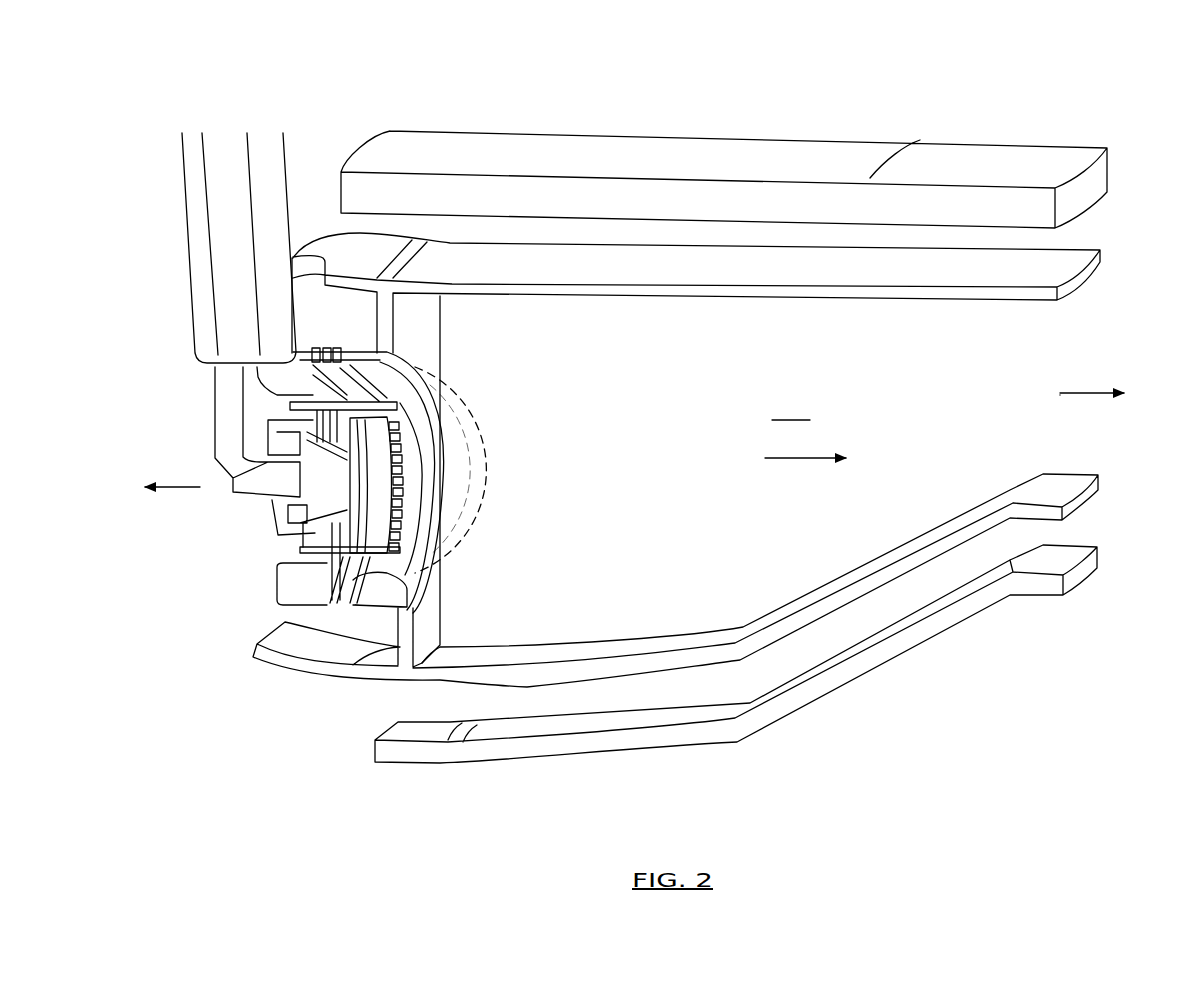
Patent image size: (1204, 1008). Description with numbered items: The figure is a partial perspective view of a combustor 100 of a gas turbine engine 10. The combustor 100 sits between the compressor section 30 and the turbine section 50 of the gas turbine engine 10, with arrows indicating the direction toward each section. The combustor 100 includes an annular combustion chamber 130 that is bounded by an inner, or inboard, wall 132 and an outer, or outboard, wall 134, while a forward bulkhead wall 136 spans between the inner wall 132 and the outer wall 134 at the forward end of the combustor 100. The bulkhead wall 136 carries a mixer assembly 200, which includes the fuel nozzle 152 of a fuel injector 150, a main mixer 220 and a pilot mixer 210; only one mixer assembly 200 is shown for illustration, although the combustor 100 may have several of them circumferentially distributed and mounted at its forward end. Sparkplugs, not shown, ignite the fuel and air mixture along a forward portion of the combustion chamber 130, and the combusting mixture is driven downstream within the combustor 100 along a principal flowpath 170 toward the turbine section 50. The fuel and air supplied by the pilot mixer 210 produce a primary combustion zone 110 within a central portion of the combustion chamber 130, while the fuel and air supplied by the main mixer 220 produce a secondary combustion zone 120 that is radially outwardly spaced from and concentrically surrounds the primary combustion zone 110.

The gas turbine engine 10 is at (725, 148).
The combustor 100 is at (640, 256).
The inner wall 132 is at (752, 300).
The outer wall 134 is at (698, 632).
The forward bulkhead wall 136 is at (430, 326).
The annular combustion chamber 130 is at (791, 410).
The fuel injector 150 is at (198, 226).
The fuel nozzle 152 is at (268, 483).
The mixer assembly 200 is at (430, 388).
The pilot mixer 210 is at (380, 487).
The main mixer 220 is at (400, 571).
The primary combustion zone 110 is at (458, 442).
The secondary combustion zone 120 is at (478, 533).
The principal flowpath 170 is at (785, 460).
The turbine section 50 is at (1106, 394).
The compressor section 30 is at (158, 488).